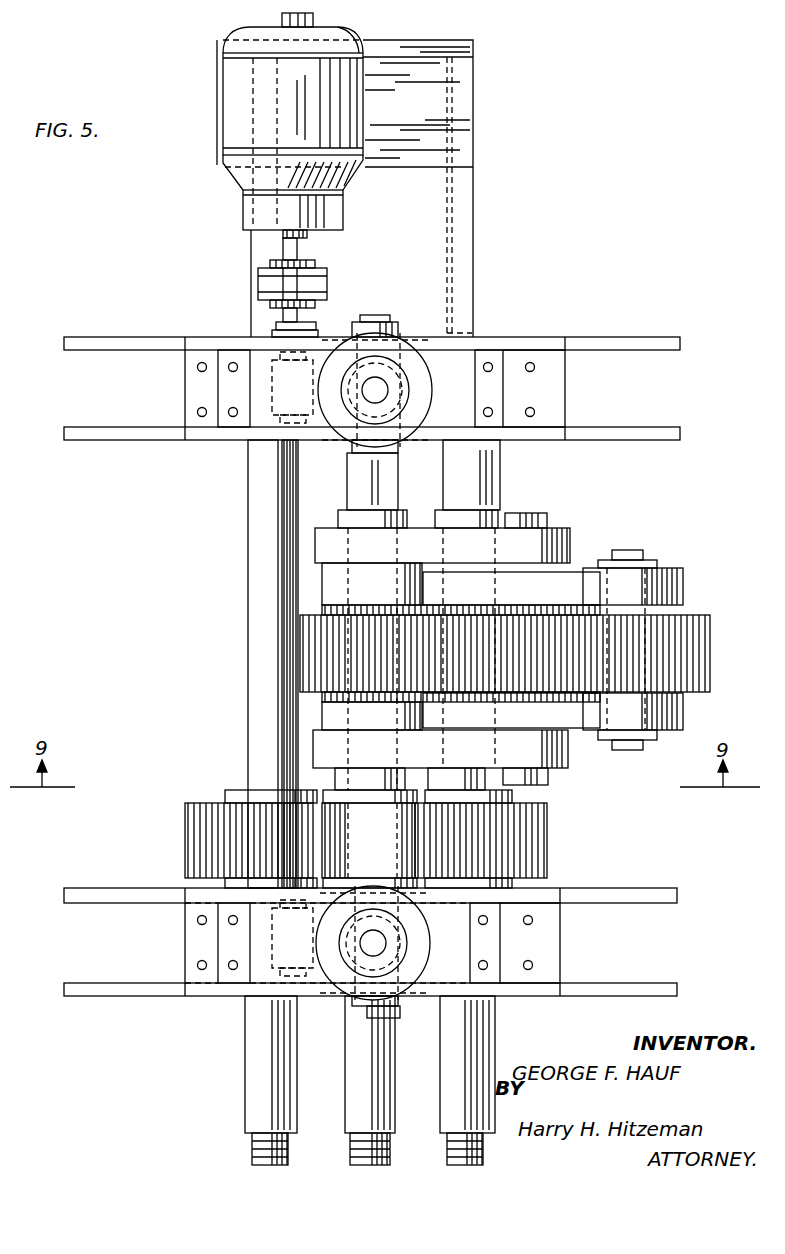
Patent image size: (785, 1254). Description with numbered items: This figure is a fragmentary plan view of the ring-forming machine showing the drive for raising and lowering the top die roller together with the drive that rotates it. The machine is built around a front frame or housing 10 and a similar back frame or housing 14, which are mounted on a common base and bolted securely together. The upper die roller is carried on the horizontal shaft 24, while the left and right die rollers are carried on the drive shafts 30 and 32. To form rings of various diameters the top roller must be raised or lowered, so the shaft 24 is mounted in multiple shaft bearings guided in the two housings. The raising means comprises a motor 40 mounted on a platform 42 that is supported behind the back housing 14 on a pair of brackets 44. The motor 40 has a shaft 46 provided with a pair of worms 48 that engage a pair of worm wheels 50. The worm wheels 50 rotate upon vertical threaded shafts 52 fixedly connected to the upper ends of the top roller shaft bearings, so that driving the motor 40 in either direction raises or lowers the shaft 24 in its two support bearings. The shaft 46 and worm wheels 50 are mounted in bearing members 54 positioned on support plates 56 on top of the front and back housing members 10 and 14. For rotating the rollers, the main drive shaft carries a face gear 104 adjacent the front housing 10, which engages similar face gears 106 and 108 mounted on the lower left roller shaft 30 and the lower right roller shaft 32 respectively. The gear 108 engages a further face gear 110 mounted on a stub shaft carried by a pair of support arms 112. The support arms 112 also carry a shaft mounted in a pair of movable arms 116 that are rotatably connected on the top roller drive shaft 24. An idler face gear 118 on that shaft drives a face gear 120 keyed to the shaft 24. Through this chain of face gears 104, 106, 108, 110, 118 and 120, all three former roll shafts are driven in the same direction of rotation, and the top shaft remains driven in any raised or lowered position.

The front frame or housing 10 is at (644, 905).
The back frame or housing 14 is at (153, 338).
The horizontal shaft 24 is at (348, 1113).
The drive shaft 30 is at (253, 1108).
The drive shaft 32 is at (440, 1076).
The motor 40 is at (228, 113).
The platform 42 is at (410, 158).
The brackets 44 is at (255, 253).
The motor shaft 46 is at (300, 245).
The worms 48 is at (272, 380).
The worm wheels 50 is at (342, 445).
The vertical threaded shafts 52 is at (378, 388).
The bearing members 54 is at (455, 365).
The support plates 56 is at (547, 350).
The face gear 104 is at (335, 843).
The face gear 106 is at (188, 845).
The face gear 108 is at (547, 857).
The face gear 110 is at (698, 660).
The support arms 112 is at (318, 548).
The movable arms 116 is at (672, 598).
The idler face gear 118 is at (484, 588).
The face gear 120 is at (300, 660).